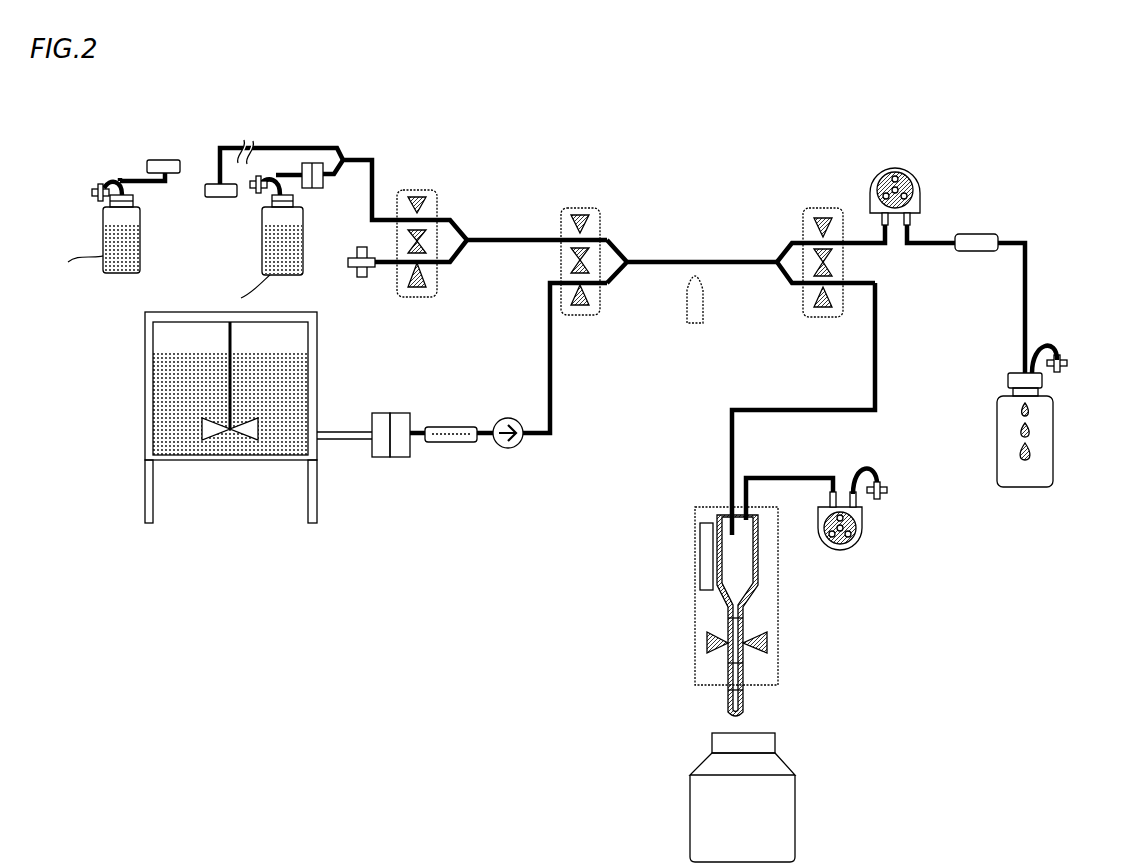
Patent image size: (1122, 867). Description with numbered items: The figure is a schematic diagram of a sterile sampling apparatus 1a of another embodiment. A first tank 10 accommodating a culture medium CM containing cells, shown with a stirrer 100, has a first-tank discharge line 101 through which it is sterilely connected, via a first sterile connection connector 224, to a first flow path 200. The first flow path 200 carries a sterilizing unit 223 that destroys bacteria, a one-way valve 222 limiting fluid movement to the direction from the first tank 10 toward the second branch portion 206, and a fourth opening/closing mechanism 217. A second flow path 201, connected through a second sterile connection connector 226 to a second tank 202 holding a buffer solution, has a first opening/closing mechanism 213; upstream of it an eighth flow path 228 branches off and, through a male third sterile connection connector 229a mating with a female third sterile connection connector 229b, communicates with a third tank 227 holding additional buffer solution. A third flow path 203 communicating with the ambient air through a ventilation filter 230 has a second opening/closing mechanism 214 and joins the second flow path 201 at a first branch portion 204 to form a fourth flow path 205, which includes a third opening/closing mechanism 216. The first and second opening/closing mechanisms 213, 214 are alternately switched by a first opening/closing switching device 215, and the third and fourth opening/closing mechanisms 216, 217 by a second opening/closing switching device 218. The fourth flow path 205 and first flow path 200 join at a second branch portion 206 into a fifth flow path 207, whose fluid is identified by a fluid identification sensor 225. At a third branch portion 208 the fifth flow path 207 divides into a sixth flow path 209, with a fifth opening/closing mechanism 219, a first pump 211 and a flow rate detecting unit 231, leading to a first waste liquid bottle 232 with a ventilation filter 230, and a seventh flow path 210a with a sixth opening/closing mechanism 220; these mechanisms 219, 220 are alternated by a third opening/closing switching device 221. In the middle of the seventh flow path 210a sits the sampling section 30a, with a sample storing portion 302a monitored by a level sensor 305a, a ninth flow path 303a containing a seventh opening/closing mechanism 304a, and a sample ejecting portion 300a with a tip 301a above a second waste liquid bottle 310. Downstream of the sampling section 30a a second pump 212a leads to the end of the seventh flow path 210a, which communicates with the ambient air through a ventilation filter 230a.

The sterile sampling apparatus 1a is at (636, 130).
The first tank 10 is at (145, 366).
The culture medium CM is at (160, 419).
The stirrer 100 is at (241, 440).
The first-tank discharge line 101 is at (346, 442).
The first flow path 200 is at (553, 410).
The second flow path 201 is at (378, 168).
The second tank 202 is at (260, 246).
The third flow path 203 is at (445, 266).
The first branch portion 204 is at (470, 238).
The fourth flow path 205 is at (528, 246).
The second branch portion 206 is at (628, 257).
The fifth flow path 207 is at (716, 258).
The third branch portion 208 is at (776, 281).
The sixth flow path 209 is at (866, 240).
The seventh flow path 210a is at (880, 300).
The first pump 211 is at (900, 166).
The second pump 212a is at (865, 530).
The first opening/closing mechanism 213 is at (420, 192).
The second opening/closing mechanism 214 is at (408, 298).
The first opening/closing switching device 215 is at (422, 301).
The third opening/closing mechanism 216 is at (585, 211).
The fourth opening/closing mechanism 217 is at (580, 318).
The second opening/closing switching device 218 is at (573, 211).
The fifth opening/closing mechanism 219 is at (820, 216).
The sixth opening/closing mechanism 220 is at (806, 301).
The third opening/closing switching device 221 is at (805, 216).
The one-way valve 222 is at (508, 450).
The sterilizing unit 223 is at (450, 445).
The first sterile connection connector 224 is at (388, 460).
The fluid identification sensor 225 is at (687, 302).
The second sterile connection connector 226 is at (312, 190).
The third tank 227 is at (142, 251).
The eighth flow path 228 is at (290, 147).
The third sterile connection connector (male type) 229a is at (212, 199).
The third sterile connection connector (female type) 229b is at (166, 159).
The ventilation filter 230 is at (96, 197).
The ventilation filter 230a is at (891, 488).
The flow rate detecting unit 231 is at (980, 232).
The first waste liquid bottle 232 is at (998, 470).
The sampling section 30a is at (700, 489).
The sample ejecting portion 300a is at (735, 720).
The nozzle 301a is at (728, 690).
The sample storing portion 302a is at (760, 562).
The ninth flow path 303a is at (728, 628).
The seventh opening/closing mechanism 304a is at (770, 643).
The level sensor 305a is at (700, 555).
The second waste liquid bottle 310 is at (790, 766).